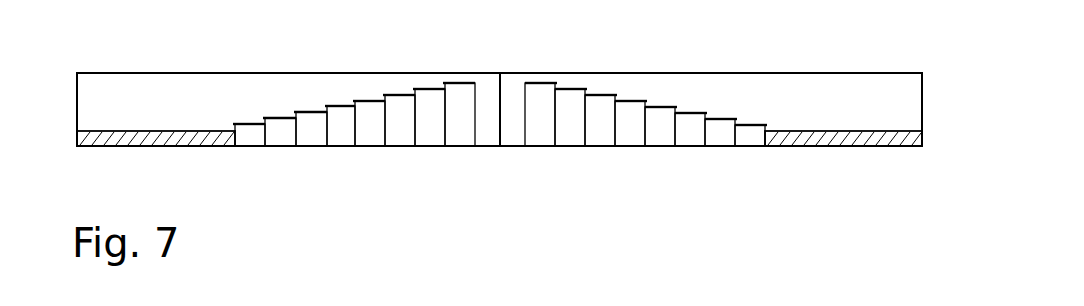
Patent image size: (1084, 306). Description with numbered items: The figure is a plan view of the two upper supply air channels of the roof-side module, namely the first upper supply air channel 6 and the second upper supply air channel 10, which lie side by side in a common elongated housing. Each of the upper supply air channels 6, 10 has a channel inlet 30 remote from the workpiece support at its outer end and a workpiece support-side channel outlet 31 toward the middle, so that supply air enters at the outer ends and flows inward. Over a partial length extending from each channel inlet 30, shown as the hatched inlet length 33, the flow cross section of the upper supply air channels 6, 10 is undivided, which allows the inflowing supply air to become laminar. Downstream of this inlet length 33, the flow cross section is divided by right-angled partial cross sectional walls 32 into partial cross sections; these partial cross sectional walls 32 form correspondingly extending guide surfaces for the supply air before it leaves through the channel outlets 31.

The second upper supply air channel 10 is at (346, 58).
The first upper supply air channel 6 is at (702, 59).
The channel inlet 30 is at (64, 105).
The channel outlet 31 is at (392, 173).
The partial cross sectional wall 32 is at (352, 133).
The partial length with undivided flow cross section 33 is at (128, 110).